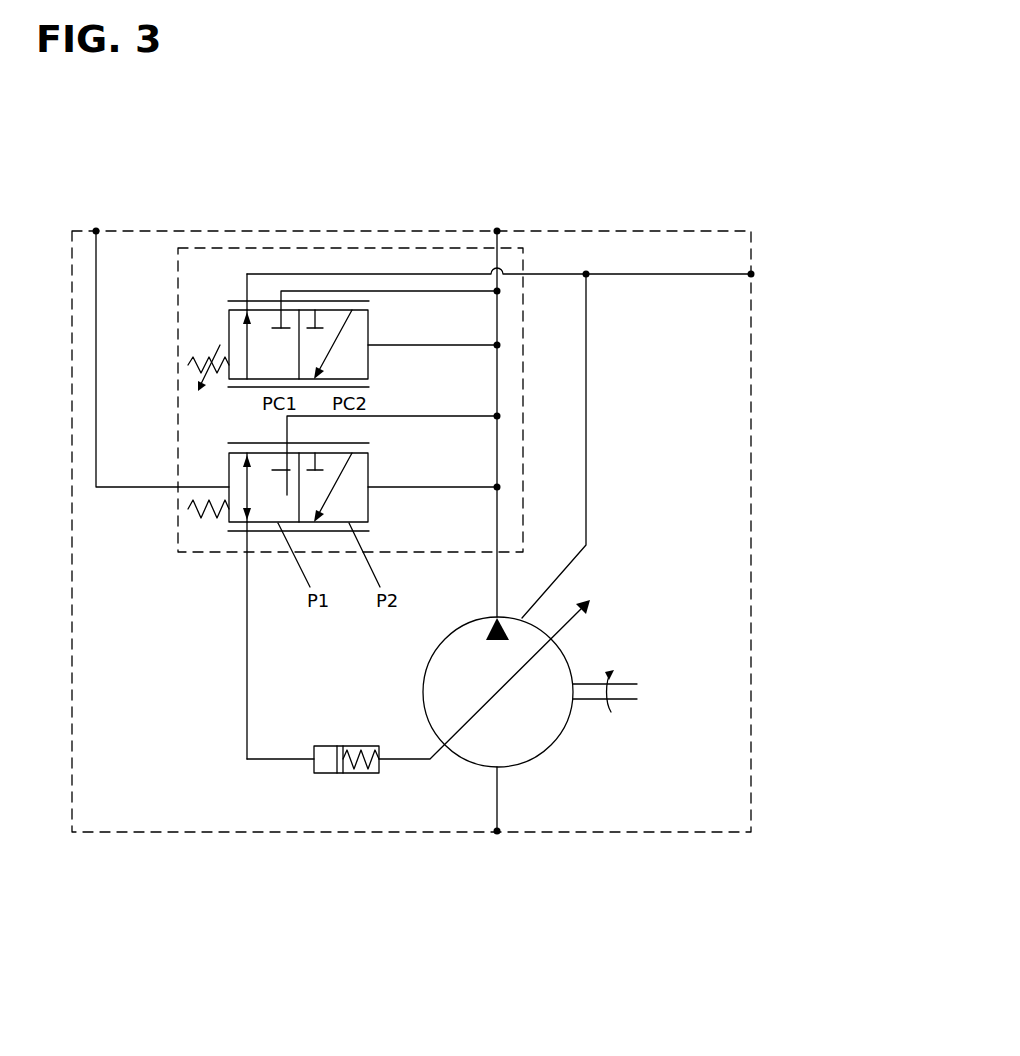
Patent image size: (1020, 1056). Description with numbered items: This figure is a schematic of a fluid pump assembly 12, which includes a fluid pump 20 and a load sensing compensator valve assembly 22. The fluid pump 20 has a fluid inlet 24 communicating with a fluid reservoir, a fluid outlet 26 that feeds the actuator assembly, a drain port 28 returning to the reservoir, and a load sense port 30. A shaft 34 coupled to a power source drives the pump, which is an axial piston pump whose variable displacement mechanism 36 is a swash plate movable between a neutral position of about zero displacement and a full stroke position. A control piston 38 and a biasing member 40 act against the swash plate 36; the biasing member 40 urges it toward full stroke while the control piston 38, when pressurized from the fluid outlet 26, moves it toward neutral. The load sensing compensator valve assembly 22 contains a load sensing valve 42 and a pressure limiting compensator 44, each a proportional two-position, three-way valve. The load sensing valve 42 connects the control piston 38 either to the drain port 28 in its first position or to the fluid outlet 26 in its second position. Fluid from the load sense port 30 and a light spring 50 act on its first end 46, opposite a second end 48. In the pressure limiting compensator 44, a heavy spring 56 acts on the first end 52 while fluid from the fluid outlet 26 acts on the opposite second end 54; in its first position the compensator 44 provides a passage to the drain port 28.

The fluid pump assembly 12 is at (712, 188).
The fluid pump 20 is at (566, 752).
The load sensing compensator valve assembly 22 is at (173, 558).
The fluid inlet 24 is at (497, 831).
The fluid outlet 26 is at (497, 231).
The drain port 28 is at (751, 274).
The load sense port 30 is at (96, 231).
The shaft 34 is at (632, 680).
The variable displacement mechanism 36 is at (460, 730).
The control piston 38 is at (333, 753).
The biasing member 40 is at (360, 775).
The load sensing valve 42 is at (385, 463).
The pressure limiting compensator 44 is at (385, 326).
The first end 46 is at (228, 468).
The second end 48 is at (368, 515).
The light spring 50 is at (197, 512).
The first end 52 is at (228, 325).
The second end 54 is at (368, 374).
The heavy spring 56 is at (197, 368).